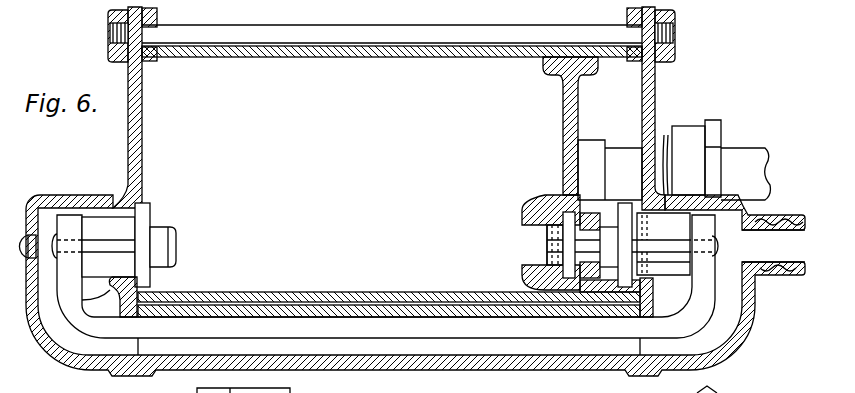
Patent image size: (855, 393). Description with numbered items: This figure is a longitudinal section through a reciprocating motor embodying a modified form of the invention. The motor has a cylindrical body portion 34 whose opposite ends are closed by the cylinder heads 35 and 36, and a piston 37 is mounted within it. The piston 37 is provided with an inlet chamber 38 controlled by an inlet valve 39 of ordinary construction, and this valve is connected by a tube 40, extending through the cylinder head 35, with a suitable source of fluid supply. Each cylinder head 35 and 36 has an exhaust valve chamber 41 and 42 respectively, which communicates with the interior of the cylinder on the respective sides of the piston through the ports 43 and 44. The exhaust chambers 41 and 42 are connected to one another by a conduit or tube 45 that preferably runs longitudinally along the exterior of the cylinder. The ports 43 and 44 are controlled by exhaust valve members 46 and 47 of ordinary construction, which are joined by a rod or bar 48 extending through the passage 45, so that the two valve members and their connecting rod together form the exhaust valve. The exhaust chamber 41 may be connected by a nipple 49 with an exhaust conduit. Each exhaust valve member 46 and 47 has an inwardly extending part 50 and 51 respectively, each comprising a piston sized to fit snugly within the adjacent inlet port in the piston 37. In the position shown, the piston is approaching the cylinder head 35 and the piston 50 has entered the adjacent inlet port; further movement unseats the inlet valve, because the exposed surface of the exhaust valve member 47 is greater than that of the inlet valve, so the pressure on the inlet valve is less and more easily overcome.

The cylindrical body portion 34 is at (450, 58).
The cylinder head 35 is at (655, 76).
The cylinder head 36 is at (127, 138).
The piston 37 is at (562, 107).
The inlet chamber 38 is at (560, 201).
The inlet valve 39 is at (547, 240).
The tube 40 is at (615, 157).
The exhaust valve chamber 41 is at (731, 318).
The exhaust valve chamber 42 is at (62, 333).
The port 43 is at (668, 253).
The port 44 is at (113, 270).
The conduit or tube 45 is at (405, 348).
The exhaust valve member 46 is at (645, 243).
The exhaust valve member 47 is at (148, 218).
The rod or bar 48 is at (375, 333).
The nipple 49 is at (800, 272).
The inwardly extending part 50 is at (620, 204).
The inwardly extending part 51 is at (160, 242).